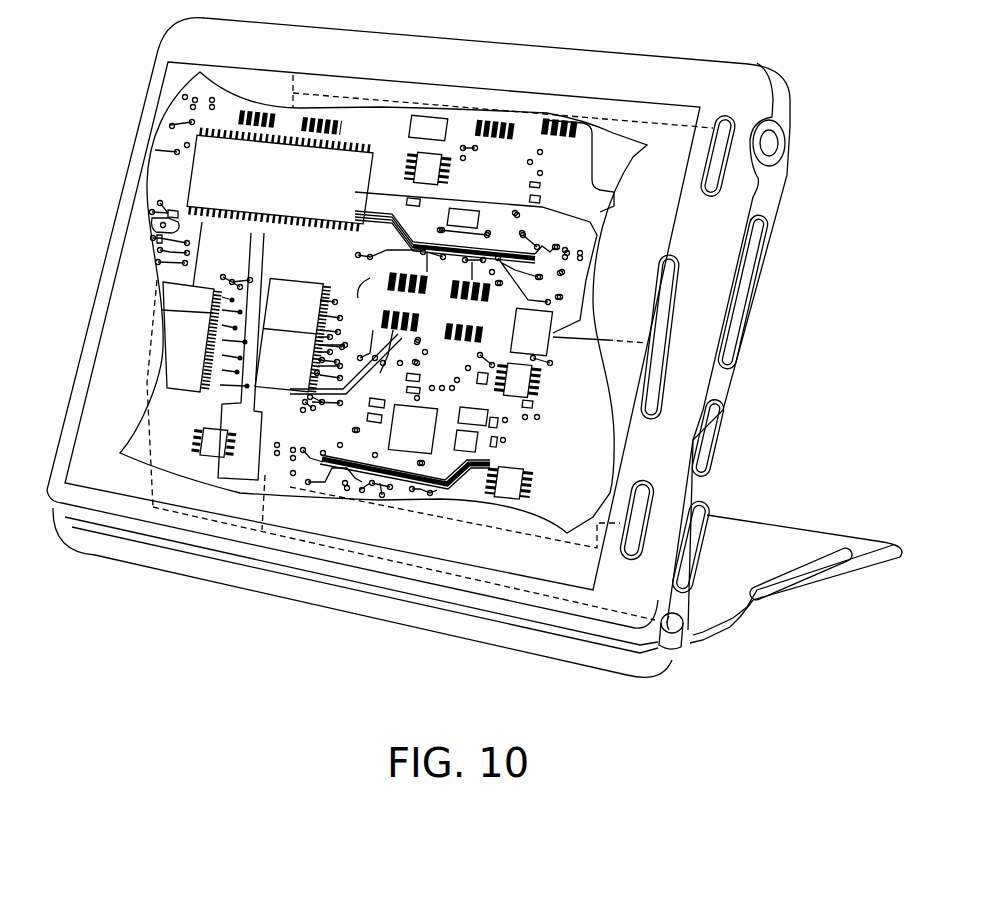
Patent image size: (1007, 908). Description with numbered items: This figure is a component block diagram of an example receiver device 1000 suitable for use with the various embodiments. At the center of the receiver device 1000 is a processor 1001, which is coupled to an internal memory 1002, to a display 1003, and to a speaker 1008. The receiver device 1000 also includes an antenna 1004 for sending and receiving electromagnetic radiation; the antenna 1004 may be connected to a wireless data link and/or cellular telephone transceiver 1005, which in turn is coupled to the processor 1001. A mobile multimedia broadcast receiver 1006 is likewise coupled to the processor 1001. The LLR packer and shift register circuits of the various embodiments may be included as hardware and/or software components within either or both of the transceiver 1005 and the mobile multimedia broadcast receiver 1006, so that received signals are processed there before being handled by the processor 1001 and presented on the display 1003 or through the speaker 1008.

The receiver device 1000 is at (723, 62).
The processor 1001 is at (300, 189).
The internal memory 1002 is at (220, 456).
The display 1003 is at (548, 93).
The antenna 1004 is at (679, 634).
The wireless data link and/or cellular telephone transceiver 1005 is at (299, 336).
The mobile multimedia broadcast receiver 1006 is at (190, 337).
The speaker 1008 is at (725, 163).